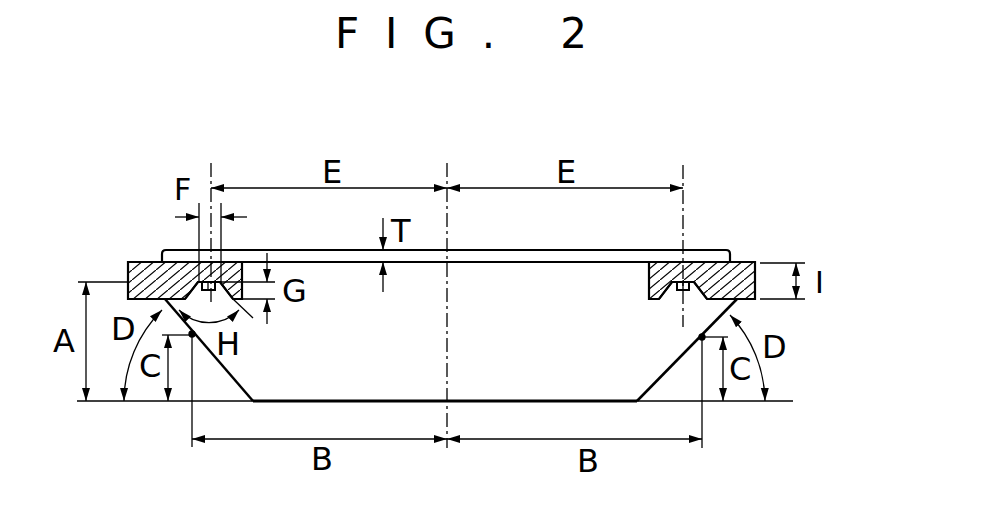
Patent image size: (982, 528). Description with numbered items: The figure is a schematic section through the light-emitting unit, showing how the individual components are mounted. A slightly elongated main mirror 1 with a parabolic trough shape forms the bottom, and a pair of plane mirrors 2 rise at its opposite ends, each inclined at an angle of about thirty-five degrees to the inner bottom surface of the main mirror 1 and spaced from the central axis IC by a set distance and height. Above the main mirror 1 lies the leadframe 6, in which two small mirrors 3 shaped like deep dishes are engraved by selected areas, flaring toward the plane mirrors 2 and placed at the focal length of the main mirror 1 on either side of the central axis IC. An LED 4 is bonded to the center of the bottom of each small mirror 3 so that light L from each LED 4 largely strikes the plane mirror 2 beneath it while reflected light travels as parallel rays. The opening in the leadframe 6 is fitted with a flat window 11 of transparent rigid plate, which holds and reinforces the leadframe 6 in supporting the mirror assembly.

The main mirror 1 is at (515, 403).
The plane mirror 2 is at (658, 377).
The small mirror 3 is at (661, 302).
The LED 4 is at (680, 291).
The leadframe 6 is at (748, 263).
The flat window 11 is at (711, 250).
The light L is at (697, 203).
The central axis IC is at (447, 173).